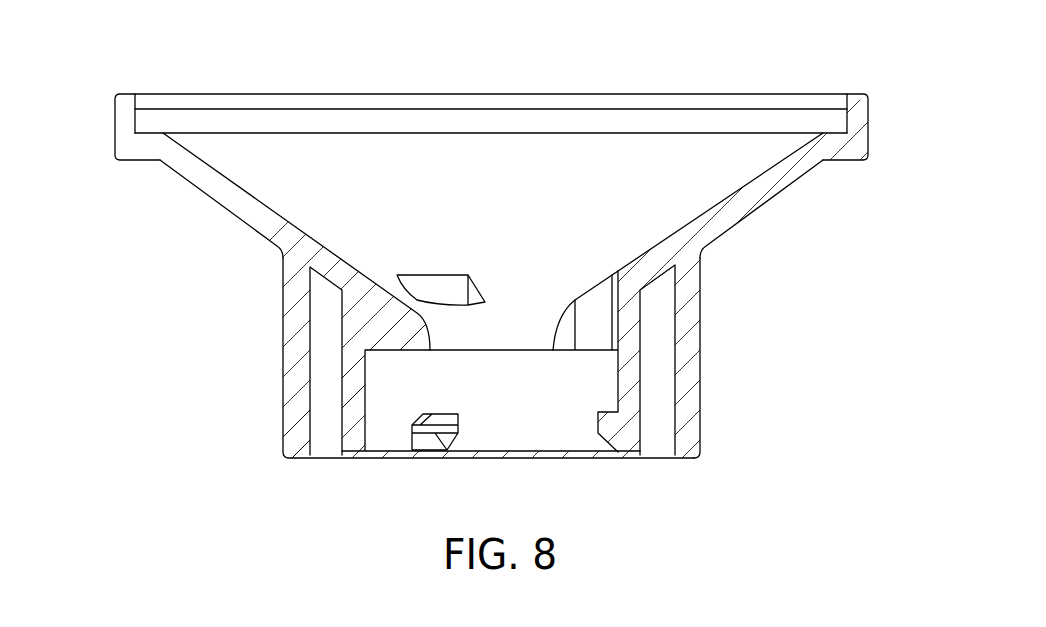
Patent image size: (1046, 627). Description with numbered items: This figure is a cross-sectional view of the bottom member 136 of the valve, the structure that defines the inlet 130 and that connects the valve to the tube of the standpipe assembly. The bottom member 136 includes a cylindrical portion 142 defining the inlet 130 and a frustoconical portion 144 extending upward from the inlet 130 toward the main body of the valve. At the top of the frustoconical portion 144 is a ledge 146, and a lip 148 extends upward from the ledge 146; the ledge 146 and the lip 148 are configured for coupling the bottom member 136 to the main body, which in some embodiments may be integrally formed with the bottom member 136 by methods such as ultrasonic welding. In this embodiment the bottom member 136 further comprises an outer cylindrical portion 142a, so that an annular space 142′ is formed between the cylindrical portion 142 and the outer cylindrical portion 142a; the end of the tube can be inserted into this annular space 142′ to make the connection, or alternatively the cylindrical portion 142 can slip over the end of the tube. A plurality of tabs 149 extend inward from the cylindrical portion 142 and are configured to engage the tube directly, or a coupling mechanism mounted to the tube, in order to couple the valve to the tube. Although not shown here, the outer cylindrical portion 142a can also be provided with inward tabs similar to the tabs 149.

The bottom member 136 is at (124, 63).
The lip 148 is at (870, 110).
The ledge 146 is at (828, 133).
The frustoconical portion 144 is at (768, 203).
The outer cylindrical portion 142a is at (700, 352).
The cylindrical portion 142 is at (643, 393).
The annular space 142′ is at (323, 441).
The inlet 130 is at (529, 381).
The tabs 149 is at (458, 414).